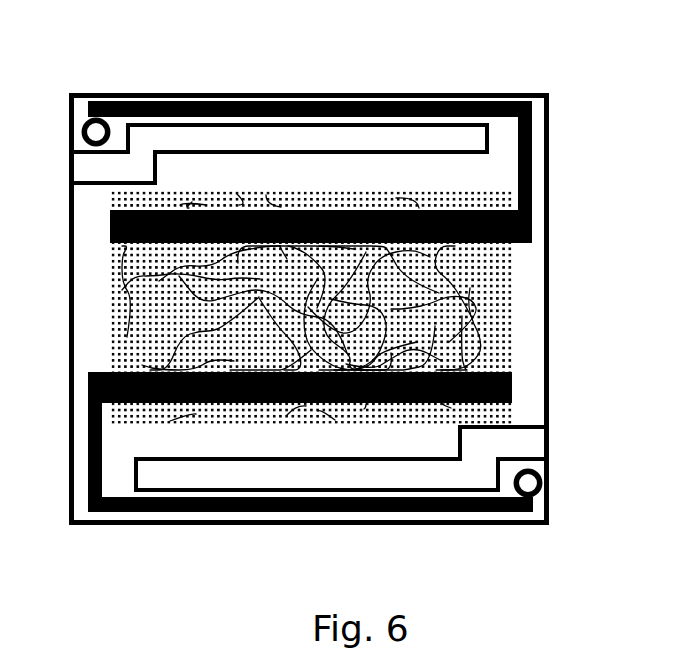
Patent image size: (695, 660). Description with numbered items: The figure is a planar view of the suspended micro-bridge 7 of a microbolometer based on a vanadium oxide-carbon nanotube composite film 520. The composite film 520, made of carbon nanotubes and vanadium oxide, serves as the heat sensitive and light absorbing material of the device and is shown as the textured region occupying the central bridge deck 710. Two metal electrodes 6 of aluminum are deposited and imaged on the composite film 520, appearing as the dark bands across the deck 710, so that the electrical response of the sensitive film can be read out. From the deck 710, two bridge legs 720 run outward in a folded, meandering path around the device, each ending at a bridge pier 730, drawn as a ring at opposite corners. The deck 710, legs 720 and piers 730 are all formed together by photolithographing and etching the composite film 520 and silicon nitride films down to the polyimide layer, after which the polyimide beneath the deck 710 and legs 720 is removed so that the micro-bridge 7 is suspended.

The metal electrode 6 is at (518, 225).
The suspended micro-bridge 7 is at (344, 373).
The vanadium oxide-carbon nanotube composite film 520 is at (508, 306).
The bridge deck 710 is at (82, 310).
The bridge leg 720 is at (289, 93).
The bridge pier 730 is at (83, 113).